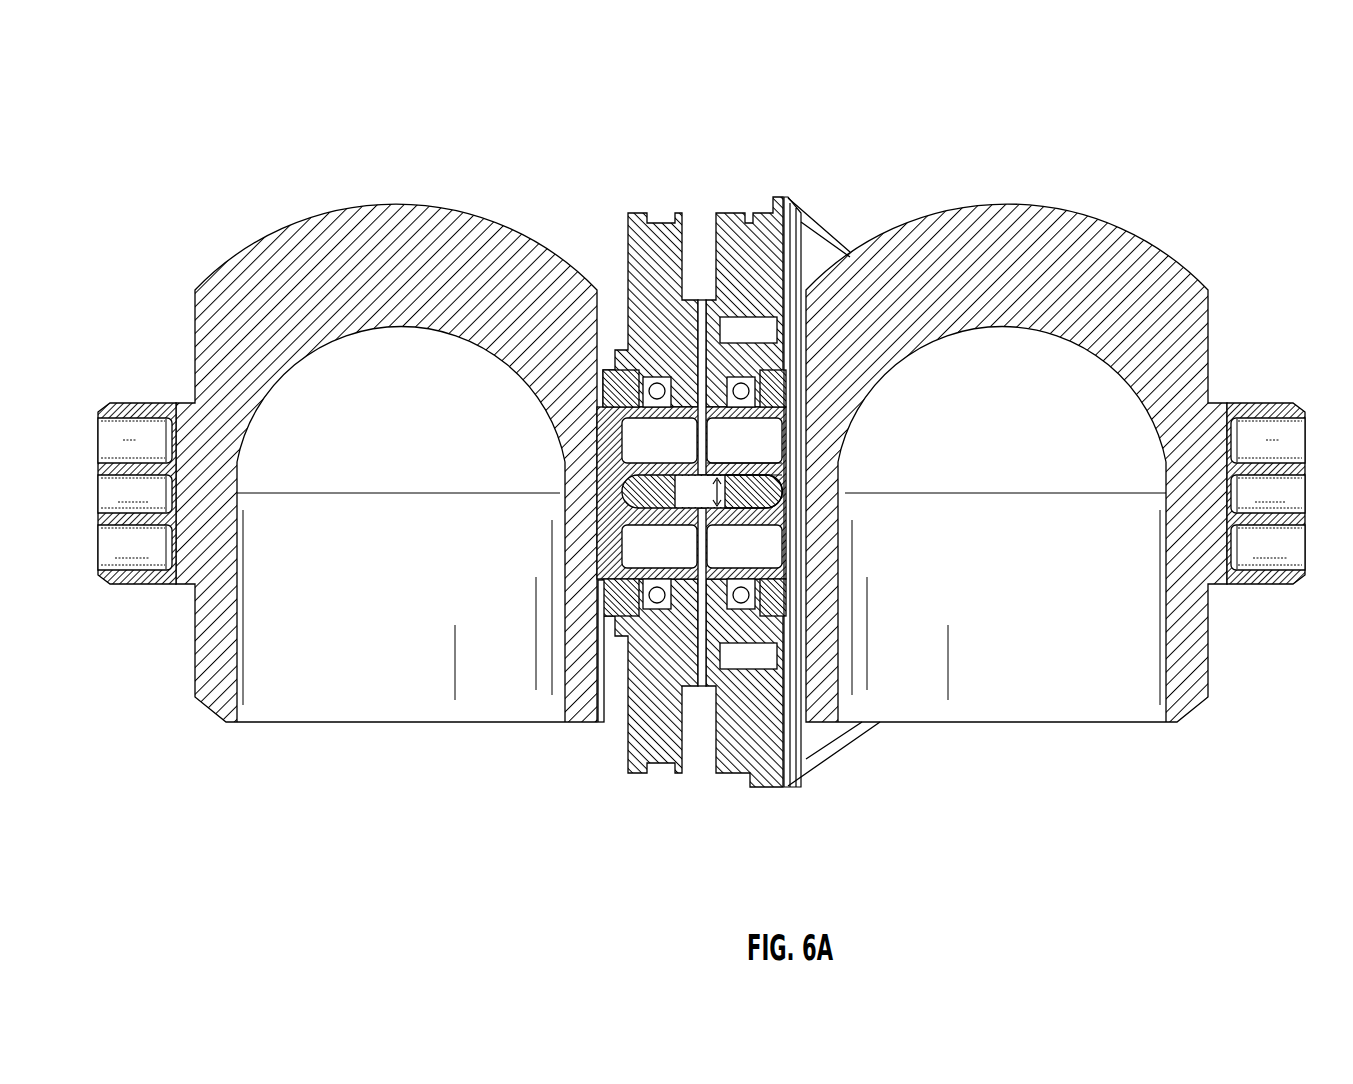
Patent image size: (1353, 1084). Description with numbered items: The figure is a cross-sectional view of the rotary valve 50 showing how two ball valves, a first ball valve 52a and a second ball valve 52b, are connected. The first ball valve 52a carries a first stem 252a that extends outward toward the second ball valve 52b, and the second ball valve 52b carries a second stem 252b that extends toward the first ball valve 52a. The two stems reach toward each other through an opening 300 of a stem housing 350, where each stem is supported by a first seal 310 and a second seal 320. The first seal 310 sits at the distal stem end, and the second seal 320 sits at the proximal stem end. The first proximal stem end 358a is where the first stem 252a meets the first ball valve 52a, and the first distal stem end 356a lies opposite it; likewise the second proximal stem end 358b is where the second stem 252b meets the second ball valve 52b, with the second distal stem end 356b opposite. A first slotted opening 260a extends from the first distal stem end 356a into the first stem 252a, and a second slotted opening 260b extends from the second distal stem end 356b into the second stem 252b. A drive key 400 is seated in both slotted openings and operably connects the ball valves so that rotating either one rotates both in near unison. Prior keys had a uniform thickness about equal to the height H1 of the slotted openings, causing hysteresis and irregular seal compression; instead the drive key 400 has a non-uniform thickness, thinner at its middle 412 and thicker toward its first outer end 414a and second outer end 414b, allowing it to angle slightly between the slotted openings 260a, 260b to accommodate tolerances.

The rotary valve 50 is at (269, 92).
The first ball valve 52a is at (400, 240).
The second ball valve 52b is at (1075, 240).
The first stem 252a is at (628, 360).
The second stem 252b is at (747, 427).
The first distal stem end 356a is at (703, 605).
The second distal stem end 356b is at (698, 405).
The first proximal stem end 358a is at (597, 615).
The second proximal stem end 358b is at (802, 222).
The middle of the drive key 412 is at (657, 462).
The first outer end of the drive key 414a is at (625, 489).
The second outer end of the drive key 414b is at (787, 493).
The first slotted opening 260a is at (640, 527).
The second slotted opening 260b is at (750, 470).
The height of the slotted openings H1 is at (704, 490).
The drive key 400 is at (763, 513).
The opening 300 is at (667, 613).
The stem housing 350 is at (747, 743).
The first seal 310 is at (740, 607).
The second seal 320 is at (797, 630).